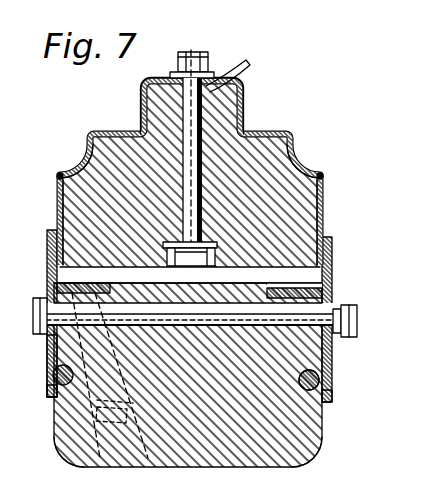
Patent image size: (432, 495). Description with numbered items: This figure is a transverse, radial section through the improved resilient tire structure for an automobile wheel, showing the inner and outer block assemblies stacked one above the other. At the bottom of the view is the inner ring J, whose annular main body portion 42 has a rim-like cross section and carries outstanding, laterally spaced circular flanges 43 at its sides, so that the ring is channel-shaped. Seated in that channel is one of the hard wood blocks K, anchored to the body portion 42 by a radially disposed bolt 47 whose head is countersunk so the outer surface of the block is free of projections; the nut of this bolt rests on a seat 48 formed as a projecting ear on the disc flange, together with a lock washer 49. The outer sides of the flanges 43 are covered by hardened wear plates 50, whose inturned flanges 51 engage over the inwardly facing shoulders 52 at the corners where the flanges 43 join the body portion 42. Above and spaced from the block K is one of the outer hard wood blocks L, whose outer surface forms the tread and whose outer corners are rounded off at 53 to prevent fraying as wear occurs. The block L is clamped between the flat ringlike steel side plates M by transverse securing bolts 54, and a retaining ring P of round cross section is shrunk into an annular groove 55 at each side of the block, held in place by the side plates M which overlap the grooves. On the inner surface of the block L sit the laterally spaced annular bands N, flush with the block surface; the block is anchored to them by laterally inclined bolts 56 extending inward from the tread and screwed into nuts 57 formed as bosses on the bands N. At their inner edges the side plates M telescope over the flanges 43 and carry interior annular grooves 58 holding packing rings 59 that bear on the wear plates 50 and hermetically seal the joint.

The annular main body portion 42 is at (238, 112).
The circular flanges 43 is at (58, 212).
The radially disposed bolt 47 is at (233, 100).
The seats 48 is at (170, 72).
The lock washers 49 is at (214, 72).
The wear plates 50 is at (58, 196).
The inturned flanges 51 is at (60, 172).
The inwardly facing shoulders 52 is at (57, 175).
The rounded outer corners 53 is at (62, 450).
The transverse securing bolts 54 is at (305, 317).
The annular grooves 55 is at (320, 381).
The bolts 56 is at (100, 398).
The nuts 57 is at (48, 353).
The interior annular grooves 58 is at (328, 253).
The packing rings 59 is at (48, 244).
The inner ring J is at (299, 143).
The hard wood blocks K is at (285, 215).
The hard wood blocks L is at (286, 436).
The side plates M is at (46, 386).
The annular bands N is at (83, 288).
The retaining rings P is at (53, 380).